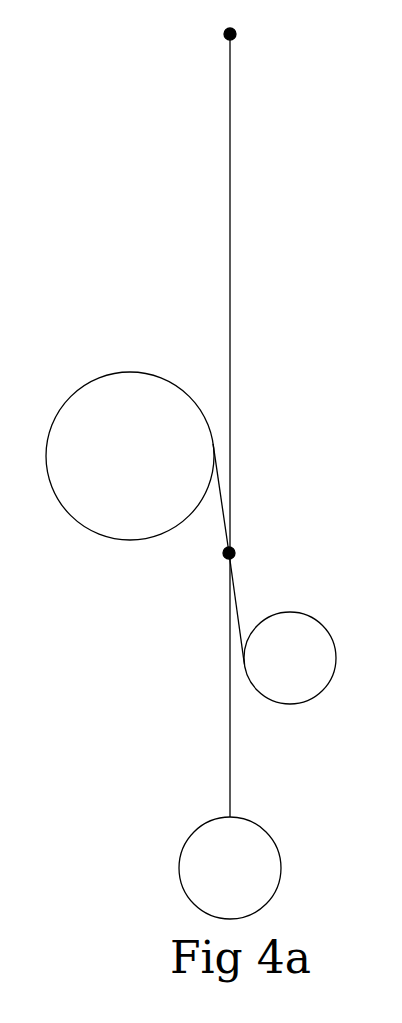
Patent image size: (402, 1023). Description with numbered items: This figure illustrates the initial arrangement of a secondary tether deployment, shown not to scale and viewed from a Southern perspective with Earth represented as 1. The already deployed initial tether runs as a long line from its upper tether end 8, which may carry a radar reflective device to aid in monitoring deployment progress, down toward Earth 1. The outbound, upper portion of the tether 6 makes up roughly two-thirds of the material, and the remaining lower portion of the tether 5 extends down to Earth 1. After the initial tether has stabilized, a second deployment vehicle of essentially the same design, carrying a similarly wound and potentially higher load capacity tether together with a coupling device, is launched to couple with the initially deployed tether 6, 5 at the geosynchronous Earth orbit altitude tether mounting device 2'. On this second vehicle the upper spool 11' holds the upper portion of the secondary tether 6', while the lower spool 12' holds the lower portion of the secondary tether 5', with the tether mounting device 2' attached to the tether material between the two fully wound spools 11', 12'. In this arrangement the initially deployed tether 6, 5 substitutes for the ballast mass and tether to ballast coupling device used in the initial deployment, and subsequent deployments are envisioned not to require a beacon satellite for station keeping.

The tether end 8 is at (236, 36).
The upper portion of the tether 6 is at (168, 296).
The upper tether spool 11' is at (118, 471).
The upper portion of the secondary tether 6' is at (198, 507).
The tether mounting device 2' is at (278, 528).
The lower portion of the secondary tether 5' is at (271, 608).
The lower tether spool 12' is at (311, 664).
The lower portion of the tether 5 is at (162, 685).
The Earth 1 is at (283, 878).